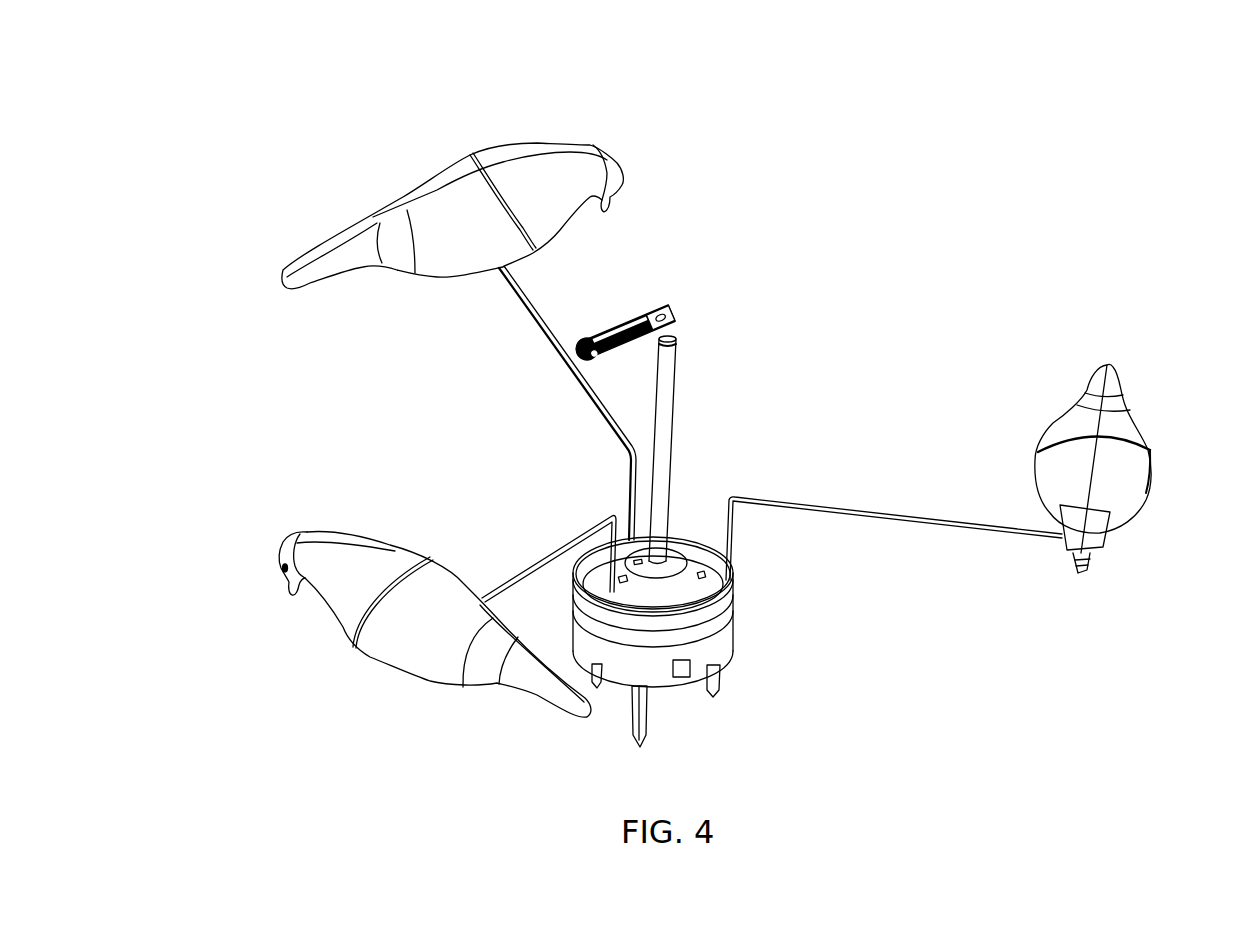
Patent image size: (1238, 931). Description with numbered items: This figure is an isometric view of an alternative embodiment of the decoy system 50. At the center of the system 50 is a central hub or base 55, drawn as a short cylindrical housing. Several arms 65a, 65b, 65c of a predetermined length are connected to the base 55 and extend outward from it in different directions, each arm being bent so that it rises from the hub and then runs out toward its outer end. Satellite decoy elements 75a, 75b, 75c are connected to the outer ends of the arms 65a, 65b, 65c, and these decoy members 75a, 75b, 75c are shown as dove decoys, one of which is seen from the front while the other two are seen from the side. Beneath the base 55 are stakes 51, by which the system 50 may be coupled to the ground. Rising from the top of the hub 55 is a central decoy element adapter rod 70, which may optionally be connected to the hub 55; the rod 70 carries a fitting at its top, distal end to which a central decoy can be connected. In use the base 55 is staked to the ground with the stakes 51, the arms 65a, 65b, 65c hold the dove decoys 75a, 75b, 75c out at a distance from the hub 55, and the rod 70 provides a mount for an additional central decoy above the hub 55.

The decoy system 50 is at (238, 98).
The stakes 51 is at (650, 728).
The central hub or base 55 is at (800, 645).
The arm 65a is at (857, 508).
The arm 65b is at (543, 557).
The arm 65c is at (525, 305).
The central decoy element adapter rod 70 is at (712, 387).
The satellite decoy element 75a is at (1153, 545).
The satellite decoy element 75b is at (326, 668).
The satellite decoy element 75c is at (556, 122).